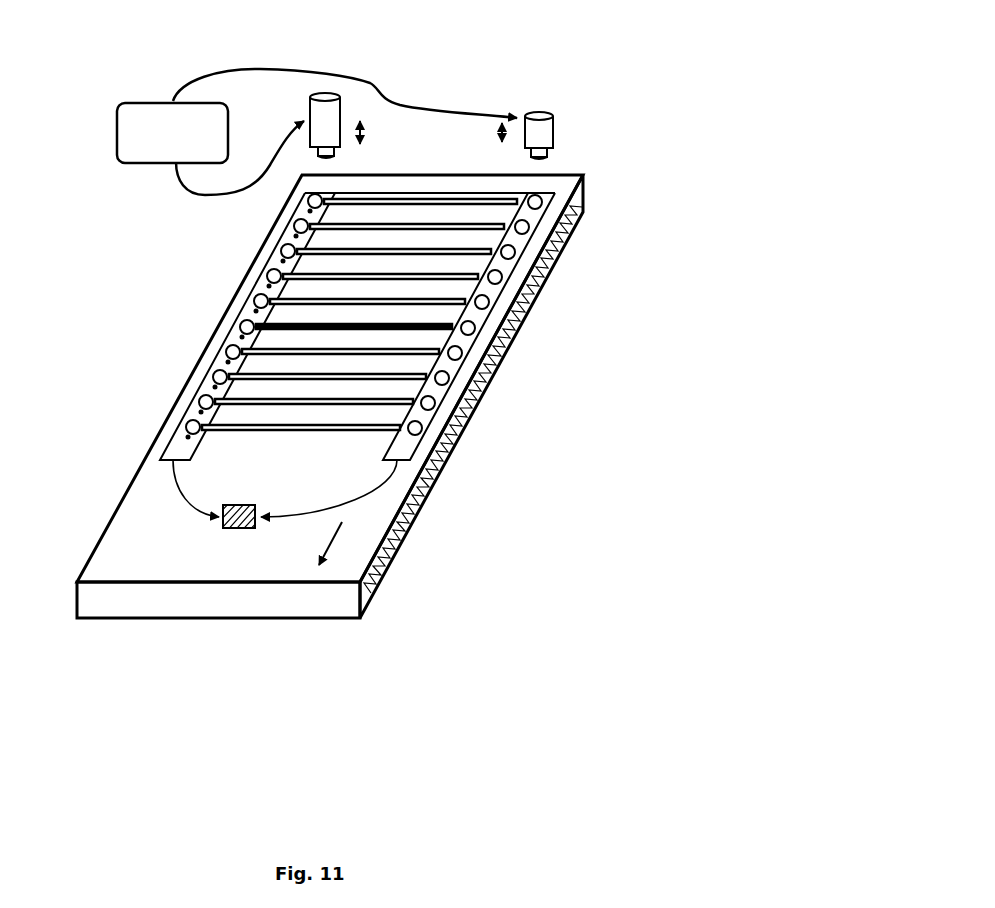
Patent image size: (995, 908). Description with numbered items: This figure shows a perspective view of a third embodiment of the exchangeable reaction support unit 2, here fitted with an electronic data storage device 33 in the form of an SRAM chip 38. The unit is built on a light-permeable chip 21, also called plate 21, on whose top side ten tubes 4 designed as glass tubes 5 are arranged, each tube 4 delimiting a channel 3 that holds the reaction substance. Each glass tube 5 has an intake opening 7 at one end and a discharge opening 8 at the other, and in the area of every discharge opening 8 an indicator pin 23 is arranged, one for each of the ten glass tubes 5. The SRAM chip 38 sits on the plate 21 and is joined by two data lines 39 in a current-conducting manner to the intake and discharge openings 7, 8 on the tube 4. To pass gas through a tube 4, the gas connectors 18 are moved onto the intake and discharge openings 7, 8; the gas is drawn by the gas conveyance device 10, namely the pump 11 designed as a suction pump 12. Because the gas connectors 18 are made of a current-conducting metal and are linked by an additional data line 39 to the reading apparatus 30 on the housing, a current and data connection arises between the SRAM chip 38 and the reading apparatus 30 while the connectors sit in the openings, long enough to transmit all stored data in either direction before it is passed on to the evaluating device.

The reaction support unit 2 is at (330, 465).
The chip 21 is at (150, 603).
The channel 3 is at (369, 326).
The tube 4 is at (369, 326).
The glass tube 5 is at (425, 280).
The intake opening 7 is at (543, 236).
The discharge opening 8 is at (243, 302).
The indicator pin 23 is at (185, 437).
The gas conveyance device 10 is at (416, 150).
The pump 11 is at (416, 150).
The suction pump 12 is at (416, 150).
The gas connector 18 is at (314, 150).
The reading apparatus 30 is at (117, 135).
The electronic data storage device 33 is at (412, 510).
The SRAM chip 38 is at (265, 493).
The data line 39 is at (233, 75).